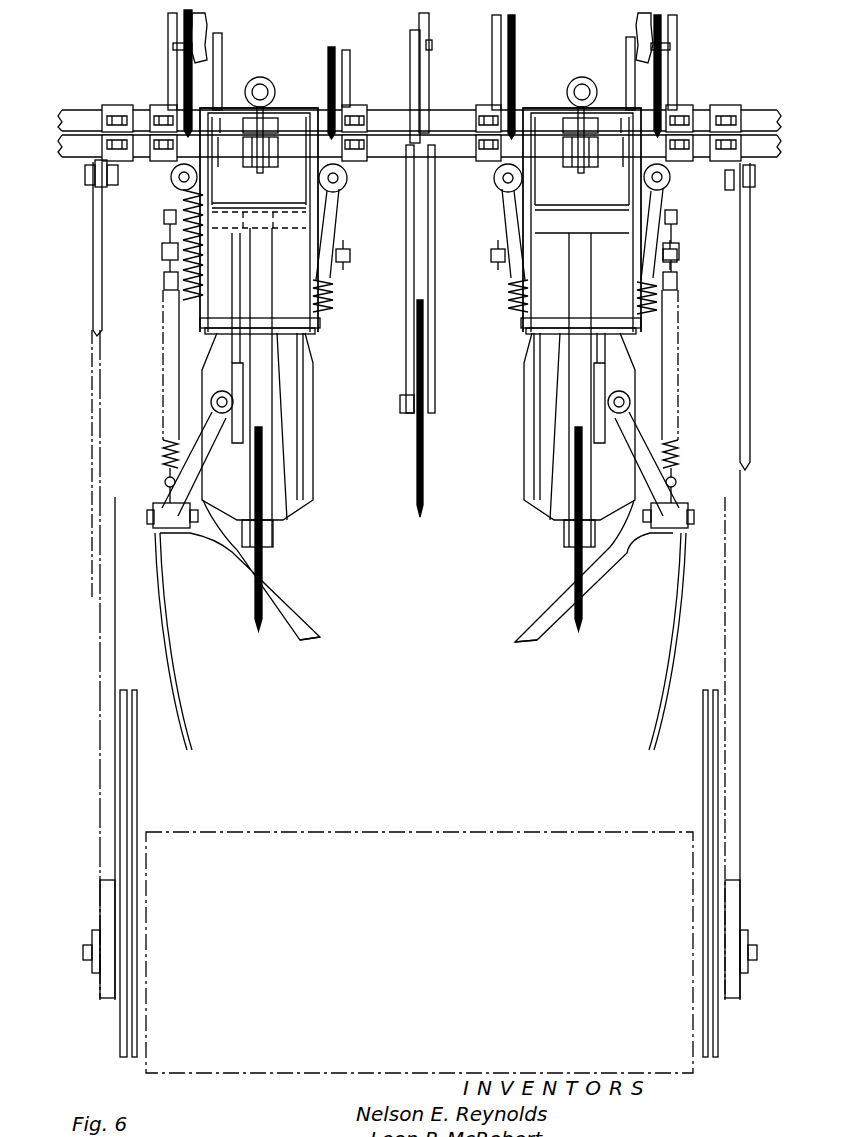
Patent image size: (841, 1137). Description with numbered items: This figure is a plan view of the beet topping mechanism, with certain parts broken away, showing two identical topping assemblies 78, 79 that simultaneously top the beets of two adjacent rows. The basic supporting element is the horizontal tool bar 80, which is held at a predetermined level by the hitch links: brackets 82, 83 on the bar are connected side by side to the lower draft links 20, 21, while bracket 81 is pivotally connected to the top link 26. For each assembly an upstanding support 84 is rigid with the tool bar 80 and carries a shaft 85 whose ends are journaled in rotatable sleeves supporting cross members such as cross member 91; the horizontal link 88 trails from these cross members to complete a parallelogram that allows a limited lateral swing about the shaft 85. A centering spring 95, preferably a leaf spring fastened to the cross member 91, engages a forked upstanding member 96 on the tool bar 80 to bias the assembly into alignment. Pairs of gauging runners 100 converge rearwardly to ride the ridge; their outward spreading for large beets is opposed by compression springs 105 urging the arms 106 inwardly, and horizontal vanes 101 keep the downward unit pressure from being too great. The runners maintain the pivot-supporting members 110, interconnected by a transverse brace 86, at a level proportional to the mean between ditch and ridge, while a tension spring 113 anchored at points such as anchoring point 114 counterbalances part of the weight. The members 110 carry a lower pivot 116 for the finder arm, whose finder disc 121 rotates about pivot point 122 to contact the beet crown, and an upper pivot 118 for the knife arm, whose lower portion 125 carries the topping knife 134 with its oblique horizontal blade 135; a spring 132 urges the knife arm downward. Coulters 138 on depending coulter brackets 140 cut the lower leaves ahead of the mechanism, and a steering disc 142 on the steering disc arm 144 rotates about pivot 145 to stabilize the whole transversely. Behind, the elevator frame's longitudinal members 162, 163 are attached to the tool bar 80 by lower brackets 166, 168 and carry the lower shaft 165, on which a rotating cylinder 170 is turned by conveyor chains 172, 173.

The draft link 20 is at (638, 23).
The draft link 21 is at (208, 19).
The top link 26 is at (419, 24).
The topping assembly 78 is at (325, 364).
The topping assembly 79 is at (528, 410).
The tool bar 80 is at (72, 150).
The bracket 81 is at (410, 81).
The bracket 82 is at (626, 60).
The bracket 83 is at (222, 56).
The upstanding support 84 is at (259, 90).
The shaft 85 is at (266, 87).
The transverse brace 86 is at (293, 236).
The horizontal link 88 is at (347, 185).
The cross member 91 is at (289, 110).
The centering spring 95 is at (271, 169).
The forked upstanding member 96 is at (255, 170).
The gauging runner 100 is at (283, 463).
The horizontal vane 101 is at (305, 489).
The compression spring 105 is at (342, 252).
The arm 106 is at (333, 220).
The pivot-supporting member 110 is at (322, 334).
The tension spring 113 is at (166, 233).
The anchoring point 114 is at (227, 150).
The pivot 116 is at (233, 232).
The pivot 118 is at (322, 324).
The finder disc 121 is at (255, 606).
The pivot point 122 is at (570, 528).
The lower portion of knife arm 125 is at (196, 450).
The spring 132 is at (162, 372).
The topping knife 134 is at (282, 590).
The knife blade 135 is at (306, 617).
The coulter 138 is at (184, 83).
The coulter bracket 140 is at (168, 63).
The steering disc 142 is at (417, 456).
The steering disc arm 144 is at (414, 278).
The pivot 145 is at (406, 398).
The longitudinal member 162 is at (742, 748).
The longitudinal member 163 is at (97, 748).
The lower shaft 165 is at (80, 950).
The lower bracket 166 is at (750, 300).
The lower bracket 168 is at (93, 300).
The rotating cylinder 170 is at (350, 832).
The conveyor chain 172 is at (703, 806).
The conveyor chain 173 is at (137, 792).